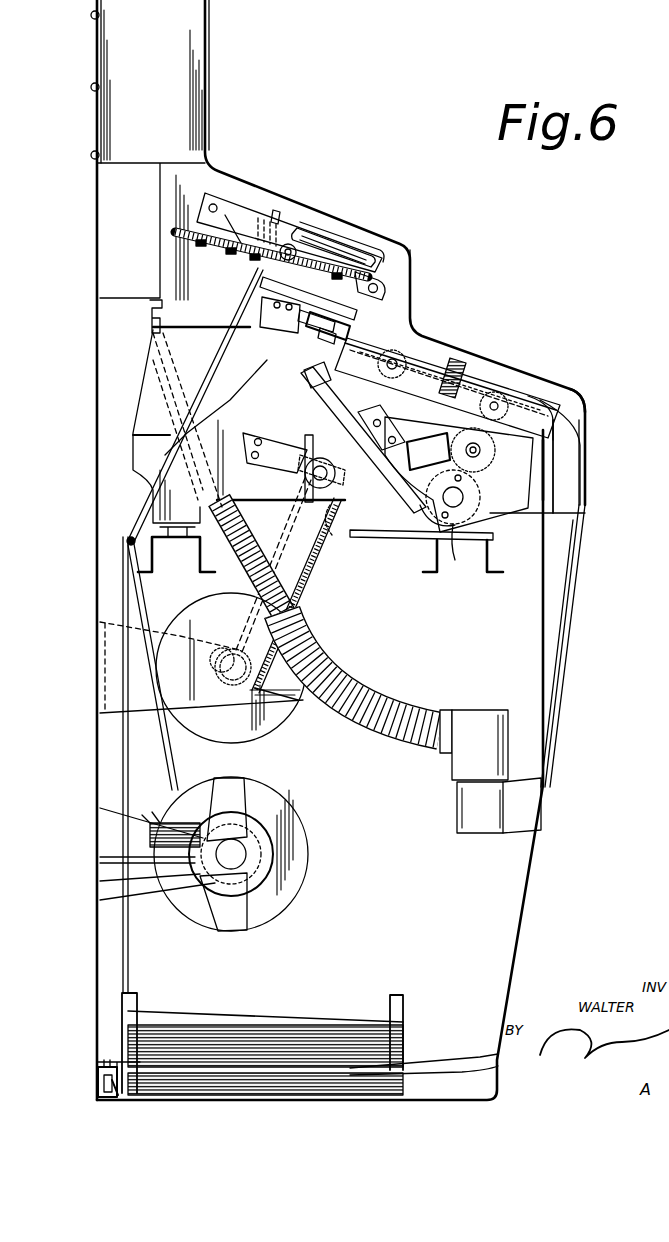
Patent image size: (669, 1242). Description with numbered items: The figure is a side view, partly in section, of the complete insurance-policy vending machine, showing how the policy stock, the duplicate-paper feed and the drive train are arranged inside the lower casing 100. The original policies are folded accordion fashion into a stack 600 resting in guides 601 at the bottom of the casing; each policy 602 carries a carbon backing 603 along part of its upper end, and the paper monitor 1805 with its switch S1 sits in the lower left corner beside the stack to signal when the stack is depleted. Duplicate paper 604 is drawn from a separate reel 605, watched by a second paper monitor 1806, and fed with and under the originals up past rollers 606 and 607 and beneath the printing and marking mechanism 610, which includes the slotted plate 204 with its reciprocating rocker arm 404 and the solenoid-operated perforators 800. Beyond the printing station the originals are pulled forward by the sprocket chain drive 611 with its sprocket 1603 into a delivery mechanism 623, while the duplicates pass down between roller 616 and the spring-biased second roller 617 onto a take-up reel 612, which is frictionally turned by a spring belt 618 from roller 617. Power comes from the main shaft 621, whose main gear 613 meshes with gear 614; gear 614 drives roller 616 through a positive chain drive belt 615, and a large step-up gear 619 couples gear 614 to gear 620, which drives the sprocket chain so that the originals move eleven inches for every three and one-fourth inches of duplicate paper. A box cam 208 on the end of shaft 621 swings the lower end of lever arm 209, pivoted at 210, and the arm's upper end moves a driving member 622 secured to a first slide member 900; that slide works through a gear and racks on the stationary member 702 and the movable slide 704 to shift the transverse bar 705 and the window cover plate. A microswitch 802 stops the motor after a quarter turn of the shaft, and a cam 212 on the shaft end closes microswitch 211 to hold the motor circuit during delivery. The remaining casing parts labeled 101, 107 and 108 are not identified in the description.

The lower casing 100 is at (519, 932).
The casing 101 is at (412, 256).
The rear panel 107 is at (566, 618).
The discharge box 108 is at (545, 813).
The slotted plate 204 is at (411, 256).
The box cam 208 is at (418, 512).
The actuating lever arm 209 is at (325, 408).
The pivot point 210 is at (380, 416).
The microswitch 211 is at (462, 378).
The cam 212 is at (455, 560).
The rocker arm 404 is at (350, 236).
The stack 600 is at (405, 1040).
The guides 601 is at (140, 993).
The policy 602 is at (420, 332).
The carbon backing 603 is at (190, 1012).
The roll of duplicate paper 604 is at (213, 800).
The reel 605 is at (292, 828).
The roller 606 is at (128, 540).
The roller 607 is at (262, 272).
The printing and marking mechanism 610 is at (286, 231).
The sprocket chain drive 611 is at (473, 358).
The take up reel 612 is at (300, 643).
The main gear 613 is at (495, 540).
The gear 614 is at (556, 428).
The positive chain drive belt 615 is at (365, 505).
The roller 616 is at (352, 518).
The second roller 617 is at (302, 512).
The spring belt 618 is at (270, 500).
The step-up gear 619 is at (547, 457).
The gear 620 is at (530, 380).
The main shaft 621 is at (465, 498).
The driving member 622 is at (270, 360).
The delivery mechanism 623 is at (580, 392).
The stationary member 702 is at (411, 268).
The movable slide 704 is at (372, 244).
The transverse bar 705 is at (297, 257).
The solenoid operated perforators 800 is at (352, 338).
The microswitch 802 is at (263, 330).
The first slide member 900 is at (358, 280).
The sprocket 1603 is at (507, 368).
The paper monitor 1805 is at (98, 1068).
The paper monitor 1806 is at (175, 893).
The switch S1 is at (100, 1094).